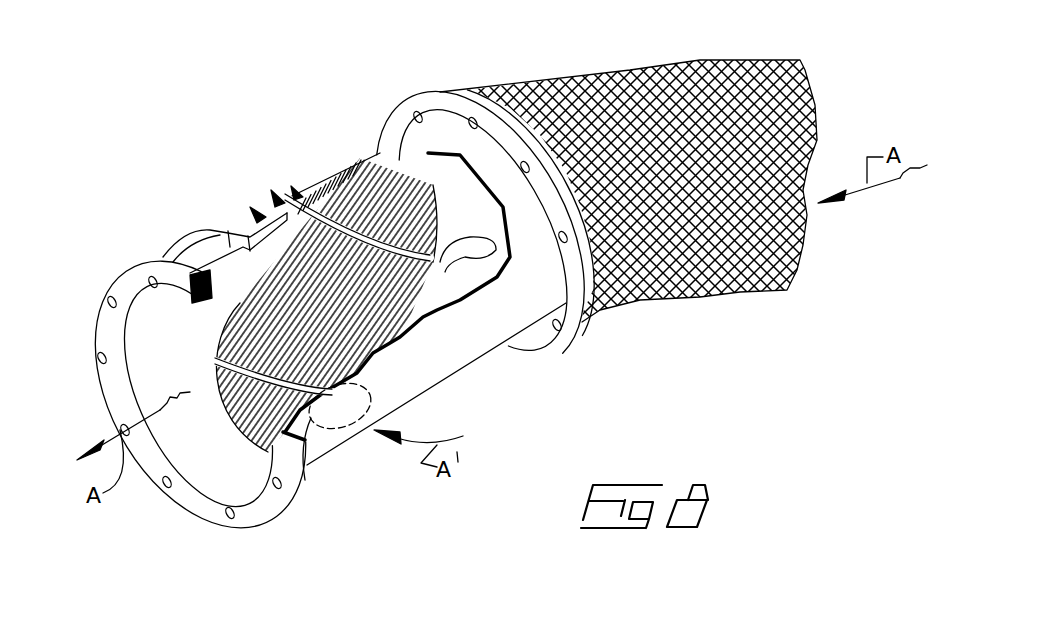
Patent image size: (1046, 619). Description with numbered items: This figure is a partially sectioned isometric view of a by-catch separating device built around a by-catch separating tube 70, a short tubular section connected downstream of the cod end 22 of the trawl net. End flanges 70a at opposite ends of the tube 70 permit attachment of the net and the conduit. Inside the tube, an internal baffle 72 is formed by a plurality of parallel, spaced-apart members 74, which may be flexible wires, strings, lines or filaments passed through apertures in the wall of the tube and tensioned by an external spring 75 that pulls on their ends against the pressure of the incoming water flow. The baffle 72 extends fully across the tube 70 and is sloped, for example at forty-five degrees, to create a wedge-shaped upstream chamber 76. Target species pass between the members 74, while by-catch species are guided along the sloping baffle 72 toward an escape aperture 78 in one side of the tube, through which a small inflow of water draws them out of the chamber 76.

The cod end 22 is at (542, 108).
The by-catch separating tube 70 is at (442, 367).
The end flanges 70a is at (247, 517).
The internal baffle 72 is at (207, 360).
The members 74 is at (433, 223).
The external spring 75 is at (270, 214).
The wedge-shaped upstream chamber 76 is at (467, 267).
The escape aperture 78 is at (346, 408).